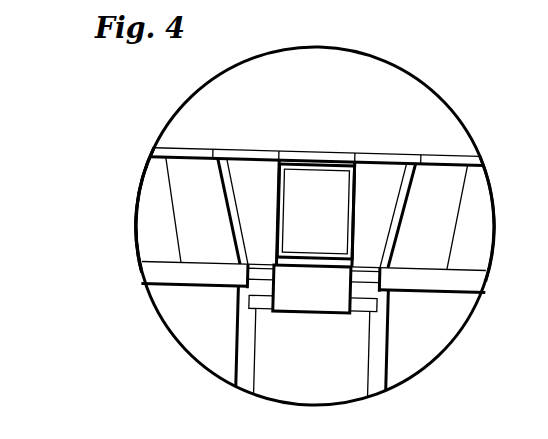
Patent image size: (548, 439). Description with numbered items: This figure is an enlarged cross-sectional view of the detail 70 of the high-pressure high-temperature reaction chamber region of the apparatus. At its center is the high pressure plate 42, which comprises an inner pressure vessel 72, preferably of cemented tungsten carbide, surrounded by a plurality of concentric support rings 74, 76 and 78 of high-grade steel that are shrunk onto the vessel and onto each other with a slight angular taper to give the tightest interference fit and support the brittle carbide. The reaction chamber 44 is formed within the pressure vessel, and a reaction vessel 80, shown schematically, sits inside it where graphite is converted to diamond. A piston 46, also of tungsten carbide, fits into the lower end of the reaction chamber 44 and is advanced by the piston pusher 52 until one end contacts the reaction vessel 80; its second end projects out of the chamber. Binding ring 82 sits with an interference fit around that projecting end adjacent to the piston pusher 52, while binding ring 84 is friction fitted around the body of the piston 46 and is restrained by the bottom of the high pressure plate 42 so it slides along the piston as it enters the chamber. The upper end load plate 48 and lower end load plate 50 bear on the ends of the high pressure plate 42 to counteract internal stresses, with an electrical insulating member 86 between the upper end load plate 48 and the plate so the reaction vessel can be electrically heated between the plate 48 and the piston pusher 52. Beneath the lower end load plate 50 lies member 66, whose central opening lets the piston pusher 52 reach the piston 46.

The high pressure plate 42 is at (138, 197).
The reaction chamber 44 is at (322, 153).
The piston 46 is at (312, 289).
The upper end load plate 48 is at (317, 121).
The lower end load plate 50 is at (313, 277).
The piston pusher 52 is at (312, 352).
The member 66 is at (310, 338).
The detail 70 is at (477, 140).
The inner pressure vessel 72 is at (315, 213).
The support ring 74 is at (233, 238).
The support ring 76 is at (315, 213).
The support ring 78 is at (315, 214).
The reaction vessel 80 is at (315, 211).
The binding ring 82 is at (261, 305).
The binding ring 84 is at (262, 273).
The electrical insulating member 86 is at (244, 150).